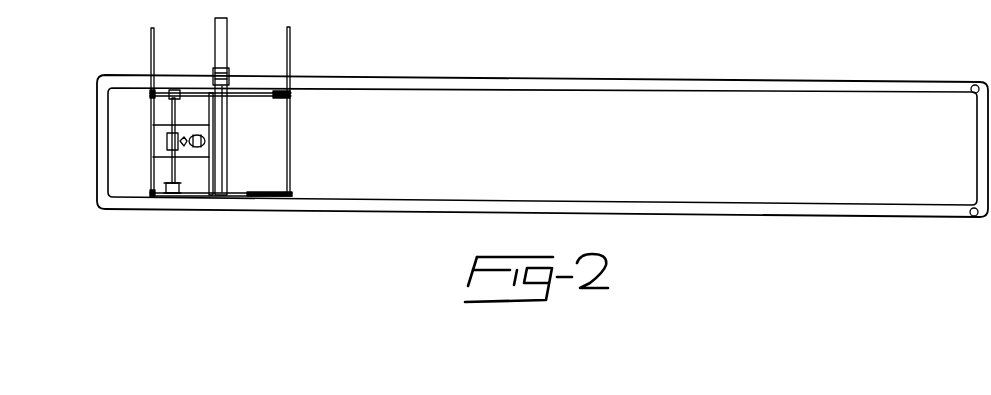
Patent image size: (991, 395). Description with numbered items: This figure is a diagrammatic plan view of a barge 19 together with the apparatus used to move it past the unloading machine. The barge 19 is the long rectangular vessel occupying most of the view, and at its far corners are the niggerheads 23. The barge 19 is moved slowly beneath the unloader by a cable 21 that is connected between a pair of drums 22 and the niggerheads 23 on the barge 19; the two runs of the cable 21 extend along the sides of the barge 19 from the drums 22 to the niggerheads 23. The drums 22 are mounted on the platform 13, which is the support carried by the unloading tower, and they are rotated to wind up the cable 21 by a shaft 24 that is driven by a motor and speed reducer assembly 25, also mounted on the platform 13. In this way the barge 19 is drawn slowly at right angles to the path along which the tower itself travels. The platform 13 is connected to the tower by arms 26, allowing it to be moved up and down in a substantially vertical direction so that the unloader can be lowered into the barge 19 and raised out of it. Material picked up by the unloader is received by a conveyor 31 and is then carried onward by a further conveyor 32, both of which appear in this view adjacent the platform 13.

The platform 13 is at (147, 158).
The barge 19 is at (545, 78).
The cable 21 is at (415, 89).
The drums 22 is at (163, 139).
The niggerheads 23 is at (972, 86).
The shaft 24 is at (168, 117).
The motor and speed reducer assembly 25 is at (192, 150).
The arms 26 is at (151, 53).
The conveyor 31 is at (228, 144).
The conveyor 32 is at (229, 45).